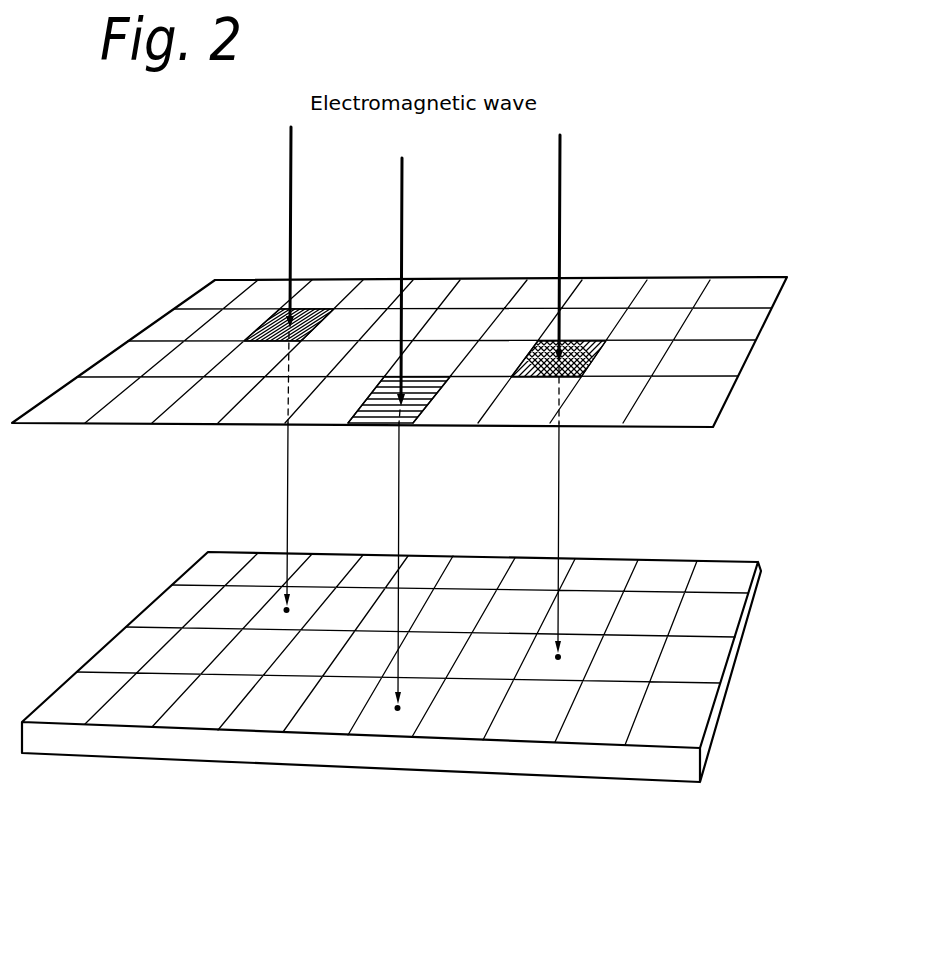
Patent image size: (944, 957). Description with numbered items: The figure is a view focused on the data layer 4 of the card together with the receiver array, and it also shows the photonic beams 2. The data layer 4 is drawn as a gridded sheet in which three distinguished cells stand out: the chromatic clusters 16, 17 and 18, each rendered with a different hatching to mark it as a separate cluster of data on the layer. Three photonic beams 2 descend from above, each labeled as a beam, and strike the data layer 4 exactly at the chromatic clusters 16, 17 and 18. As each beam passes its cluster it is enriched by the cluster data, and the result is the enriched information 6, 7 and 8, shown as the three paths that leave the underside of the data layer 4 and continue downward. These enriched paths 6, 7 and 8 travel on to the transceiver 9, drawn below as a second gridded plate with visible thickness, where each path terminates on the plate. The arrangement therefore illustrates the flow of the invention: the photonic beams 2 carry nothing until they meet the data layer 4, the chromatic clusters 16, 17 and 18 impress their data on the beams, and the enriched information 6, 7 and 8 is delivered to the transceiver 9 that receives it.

The photonic beams 2 is at (291, 182).
The data layer 4 is at (700, 393).
The enriched information 6 is at (285, 490).
The enriched information 7 is at (402, 490).
The enriched information 8 is at (563, 490).
The transceiver 9 is at (707, 737).
The chromatic cluster 16 is at (288, 325).
The chromatic cluster 17 is at (375, 425).
The chromatic cluster 18 is at (560, 358).